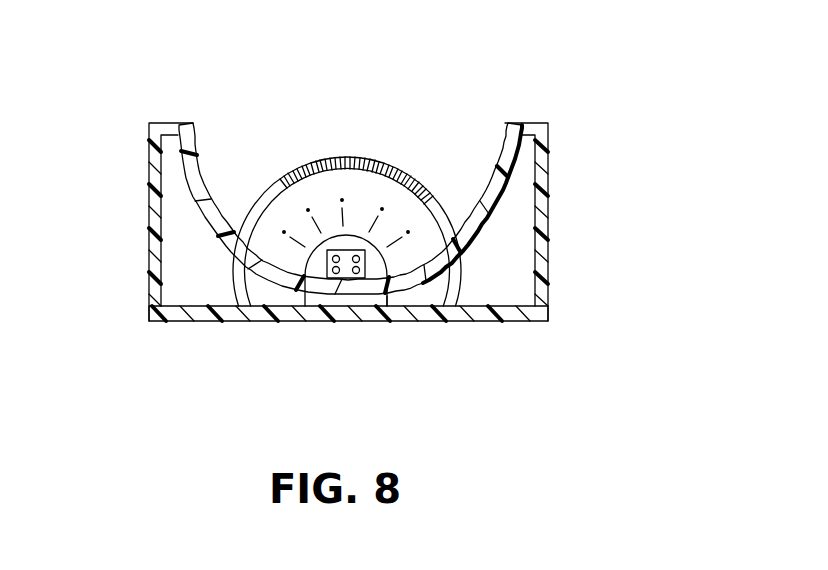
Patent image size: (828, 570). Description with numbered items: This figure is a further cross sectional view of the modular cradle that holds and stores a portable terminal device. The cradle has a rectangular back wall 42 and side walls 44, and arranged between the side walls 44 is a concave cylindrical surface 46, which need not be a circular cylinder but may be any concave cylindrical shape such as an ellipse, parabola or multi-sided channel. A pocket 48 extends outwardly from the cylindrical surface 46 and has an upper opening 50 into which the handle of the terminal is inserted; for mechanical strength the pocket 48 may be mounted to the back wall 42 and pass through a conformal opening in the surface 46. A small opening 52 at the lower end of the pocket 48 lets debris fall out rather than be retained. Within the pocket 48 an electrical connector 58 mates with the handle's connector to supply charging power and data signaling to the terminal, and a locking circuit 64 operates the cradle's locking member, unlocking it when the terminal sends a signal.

The back wall 42 is at (512, 322).
The side walls 44 is at (152, 232).
The concave cylindrical surface 46 is at (203, 170).
The pocket 48 is at (423, 183).
The upper opening 50 is at (365, 186).
The small opening 52 is at (395, 306).
The electrical connector 58 is at (314, 283).
The locking circuit 64 is at (369, 300).